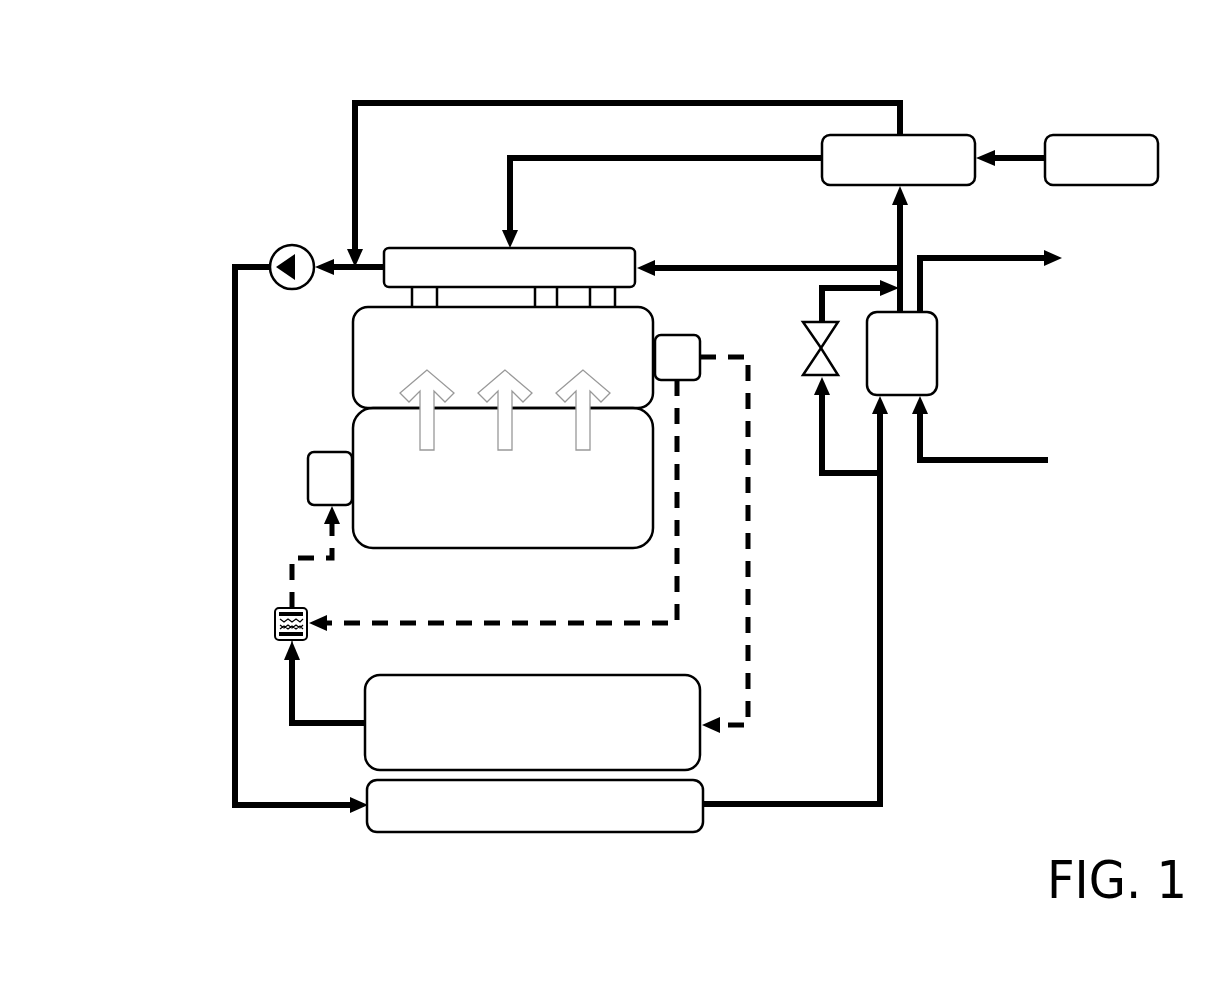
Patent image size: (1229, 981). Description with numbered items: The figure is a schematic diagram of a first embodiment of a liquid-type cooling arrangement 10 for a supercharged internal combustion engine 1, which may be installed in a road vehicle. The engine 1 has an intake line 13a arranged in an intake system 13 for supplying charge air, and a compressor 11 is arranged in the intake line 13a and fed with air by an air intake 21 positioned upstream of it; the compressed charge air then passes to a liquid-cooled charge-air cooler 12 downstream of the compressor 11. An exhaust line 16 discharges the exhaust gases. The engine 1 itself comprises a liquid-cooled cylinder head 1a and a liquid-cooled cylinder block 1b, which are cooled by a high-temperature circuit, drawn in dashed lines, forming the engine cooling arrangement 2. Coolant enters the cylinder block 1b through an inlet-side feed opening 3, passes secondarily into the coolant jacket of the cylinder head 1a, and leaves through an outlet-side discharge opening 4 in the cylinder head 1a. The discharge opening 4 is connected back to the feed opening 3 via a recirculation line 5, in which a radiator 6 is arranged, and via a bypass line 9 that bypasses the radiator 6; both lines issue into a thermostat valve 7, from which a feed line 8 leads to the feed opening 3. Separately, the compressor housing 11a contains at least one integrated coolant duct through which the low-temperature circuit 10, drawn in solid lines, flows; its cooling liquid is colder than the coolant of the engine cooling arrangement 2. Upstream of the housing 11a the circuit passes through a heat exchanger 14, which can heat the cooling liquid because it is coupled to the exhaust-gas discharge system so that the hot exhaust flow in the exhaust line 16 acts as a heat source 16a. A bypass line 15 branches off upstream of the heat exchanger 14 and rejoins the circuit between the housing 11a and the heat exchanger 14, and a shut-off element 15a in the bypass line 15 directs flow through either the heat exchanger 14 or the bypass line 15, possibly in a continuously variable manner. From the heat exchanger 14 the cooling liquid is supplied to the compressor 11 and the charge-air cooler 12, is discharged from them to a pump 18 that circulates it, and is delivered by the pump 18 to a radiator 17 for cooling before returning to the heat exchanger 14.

The supercharged internal combustion engine 1 is at (180, 154).
The cylinder head 1a is at (503, 357).
The cylinder block 1b is at (503, 478).
The engine cooling arrangement 2 is at (503, 453).
The feed opening 3 is at (313, 462).
The discharge opening 4 is at (687, 337).
The recirculation line 5 is at (752, 590).
The radiator 6 is at (407, 683).
The thermostat valve 7 is at (278, 613).
The feed line 8 is at (333, 532).
The bypass line 9 is at (545, 623).
The liquid-type cooling arrangement 10 is at (773, 103).
The compressor 11 is at (936, 123).
The compressor housing 11a is at (938, 145).
The charge-air cooler 12 is at (642, 277).
The intake system 13 is at (662, 203).
The intake line 13a is at (642, 163).
The heat exchanger 14 is at (937, 338).
The bypass line 15 is at (860, 478).
The shut-off element 15a is at (813, 337).
The exhaust line 16 is at (973, 262).
The heat source 16a is at (990, 460).
The radiator 17 is at (685, 812).
The pump 18 is at (294, 245).
The air intake 21 is at (1098, 155).